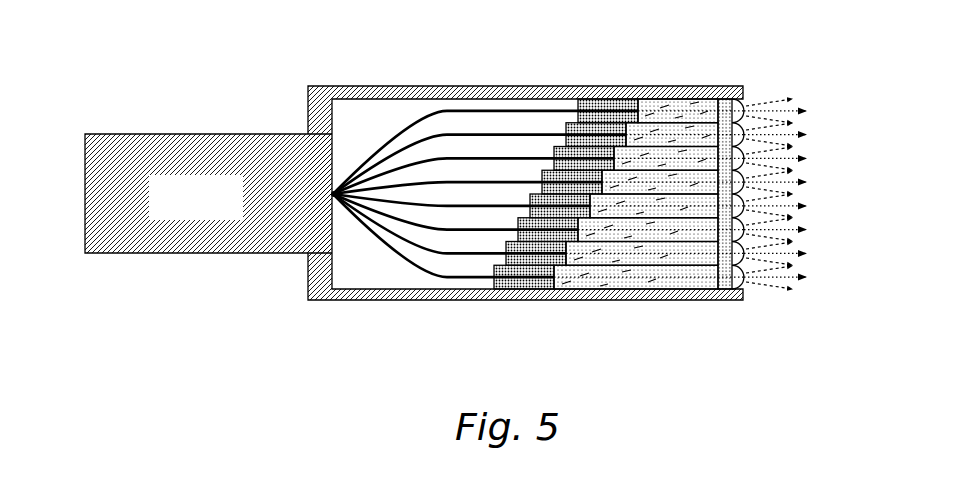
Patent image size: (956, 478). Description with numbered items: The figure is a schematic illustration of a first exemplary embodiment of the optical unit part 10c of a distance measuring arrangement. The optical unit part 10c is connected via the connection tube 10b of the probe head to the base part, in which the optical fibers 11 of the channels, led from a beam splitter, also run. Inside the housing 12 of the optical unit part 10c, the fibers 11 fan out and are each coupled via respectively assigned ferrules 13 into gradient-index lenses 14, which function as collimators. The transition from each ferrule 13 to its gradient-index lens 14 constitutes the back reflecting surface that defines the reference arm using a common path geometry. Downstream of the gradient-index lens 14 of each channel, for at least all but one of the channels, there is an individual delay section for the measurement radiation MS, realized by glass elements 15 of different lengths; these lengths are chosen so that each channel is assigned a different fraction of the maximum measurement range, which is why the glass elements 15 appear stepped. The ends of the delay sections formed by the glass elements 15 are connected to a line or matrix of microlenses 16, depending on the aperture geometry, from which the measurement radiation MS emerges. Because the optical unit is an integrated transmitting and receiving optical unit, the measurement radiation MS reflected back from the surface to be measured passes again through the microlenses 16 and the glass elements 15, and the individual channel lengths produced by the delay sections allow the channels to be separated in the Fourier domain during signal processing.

The connection tube 10b is at (216, 208).
The optical unit part 10c is at (242, 332).
The optical fibers 11 is at (333, 194).
The housing 12 is at (415, 92).
The ferrules 13 is at (527, 289).
The gradient-index lenses 14 is at (650, 108).
The glass elements 15 is at (652, 289).
The microlenses 16 is at (736, 289).
The measurement radiation MS is at (775, 180).